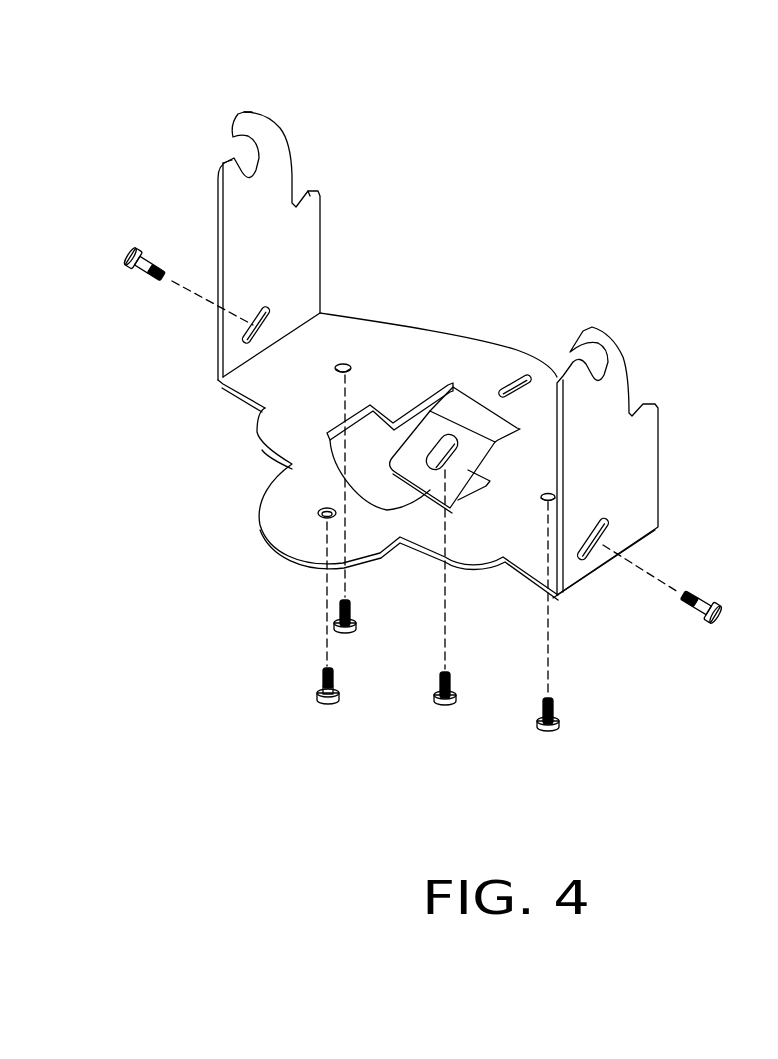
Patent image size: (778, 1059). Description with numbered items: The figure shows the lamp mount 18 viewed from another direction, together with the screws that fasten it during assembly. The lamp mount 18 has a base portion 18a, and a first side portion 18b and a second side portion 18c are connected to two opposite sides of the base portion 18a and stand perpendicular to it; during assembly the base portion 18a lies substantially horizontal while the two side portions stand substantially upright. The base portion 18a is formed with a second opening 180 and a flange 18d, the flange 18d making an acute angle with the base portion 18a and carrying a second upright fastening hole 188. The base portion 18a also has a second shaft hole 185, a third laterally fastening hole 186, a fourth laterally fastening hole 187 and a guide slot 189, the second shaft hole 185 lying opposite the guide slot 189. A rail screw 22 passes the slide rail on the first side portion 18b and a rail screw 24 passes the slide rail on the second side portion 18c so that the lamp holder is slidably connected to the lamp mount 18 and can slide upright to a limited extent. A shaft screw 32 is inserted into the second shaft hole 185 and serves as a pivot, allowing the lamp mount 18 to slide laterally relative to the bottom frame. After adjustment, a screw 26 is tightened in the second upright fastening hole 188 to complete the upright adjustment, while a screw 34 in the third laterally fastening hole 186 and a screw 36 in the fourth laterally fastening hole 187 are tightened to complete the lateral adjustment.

The lamp mount 18 is at (651, 64).
The base portion 18a is at (287, 432).
The first side portion 18b is at (600, 353).
The second side portion 18c is at (280, 170).
The flange 18d is at (418, 483).
The second opening 180 is at (265, 408).
The second shaft hole 185 is at (325, 510).
The third laterally fastening hole 186 is at (546, 491).
The fourth laterally fastening hole 187 is at (340, 362).
The second upright fastening hole 188 is at (373, 443).
The guide slot 189 is at (506, 386).
The rail screw 22 is at (710, 620).
The rail screw 24 is at (130, 255).
The screw 26 is at (443, 707).
The shaft screw 32 is at (320, 707).
The screw 34 is at (560, 730).
The screw 36 is at (336, 625).